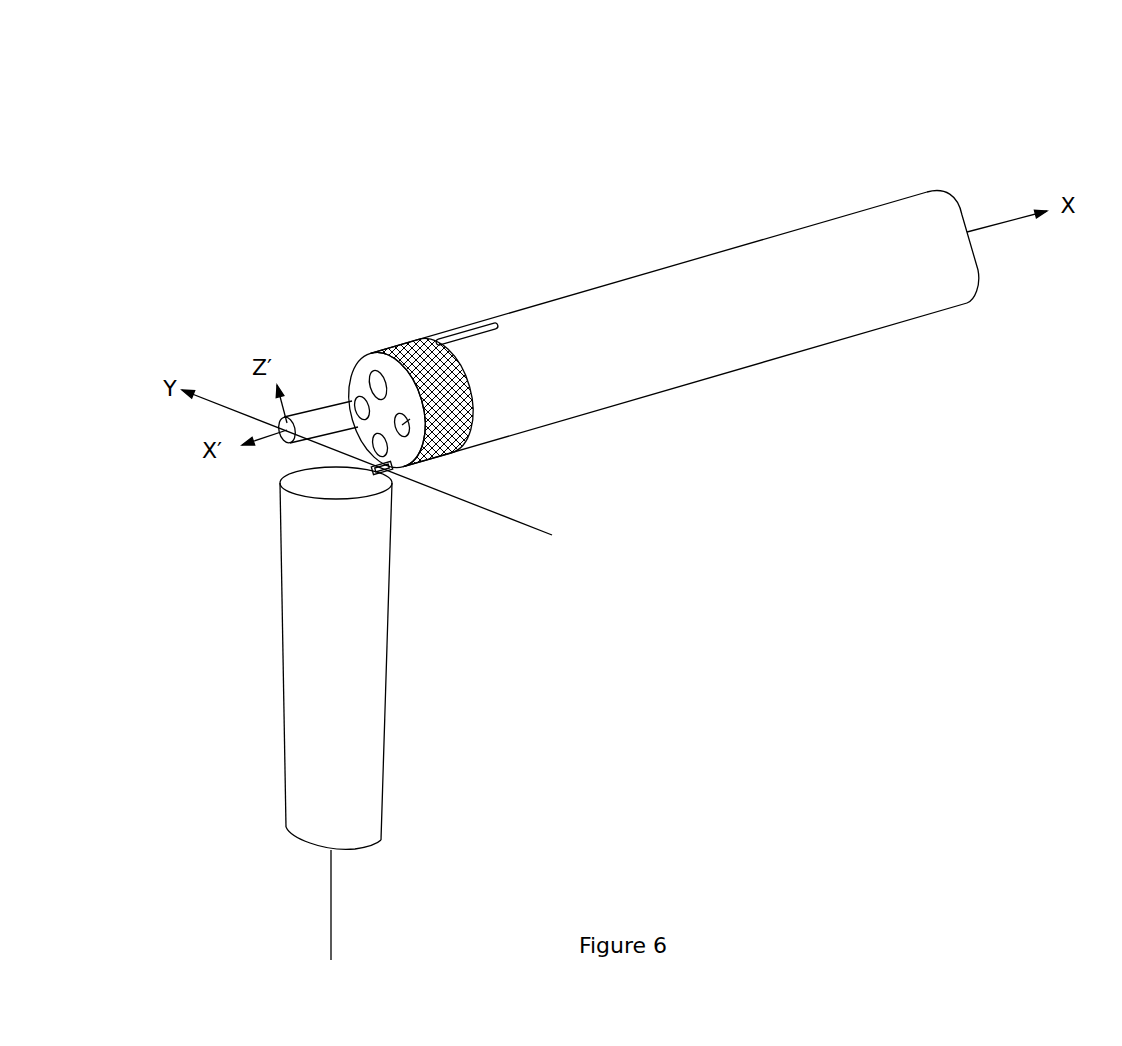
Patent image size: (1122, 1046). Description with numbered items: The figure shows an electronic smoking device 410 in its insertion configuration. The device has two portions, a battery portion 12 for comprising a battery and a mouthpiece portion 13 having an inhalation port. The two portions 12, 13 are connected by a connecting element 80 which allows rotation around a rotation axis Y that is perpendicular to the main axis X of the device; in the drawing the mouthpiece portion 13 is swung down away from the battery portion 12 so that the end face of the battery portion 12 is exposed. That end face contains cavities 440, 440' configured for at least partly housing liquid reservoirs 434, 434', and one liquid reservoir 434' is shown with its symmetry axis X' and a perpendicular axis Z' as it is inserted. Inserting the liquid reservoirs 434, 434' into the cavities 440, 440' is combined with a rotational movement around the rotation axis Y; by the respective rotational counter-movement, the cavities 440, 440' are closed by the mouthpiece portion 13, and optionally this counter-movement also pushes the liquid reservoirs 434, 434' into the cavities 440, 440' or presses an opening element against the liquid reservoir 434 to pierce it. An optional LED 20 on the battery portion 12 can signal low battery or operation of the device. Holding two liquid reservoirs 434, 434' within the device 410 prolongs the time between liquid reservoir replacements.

The electronic smoking device 410 is at (783, 158).
The battery portion 12 is at (760, 367).
The mouthpiece portion 13 is at (377, 713).
The light-emitting diode (LED) 20 is at (490, 330).
The connecting element 80 is at (392, 472).
The cavity 440 is at (495, 410).
The liquid reservoir 434 is at (503, 446).
The cavity 440' is at (481, 381).
The liquid reservoir 434' is at (442, 413).